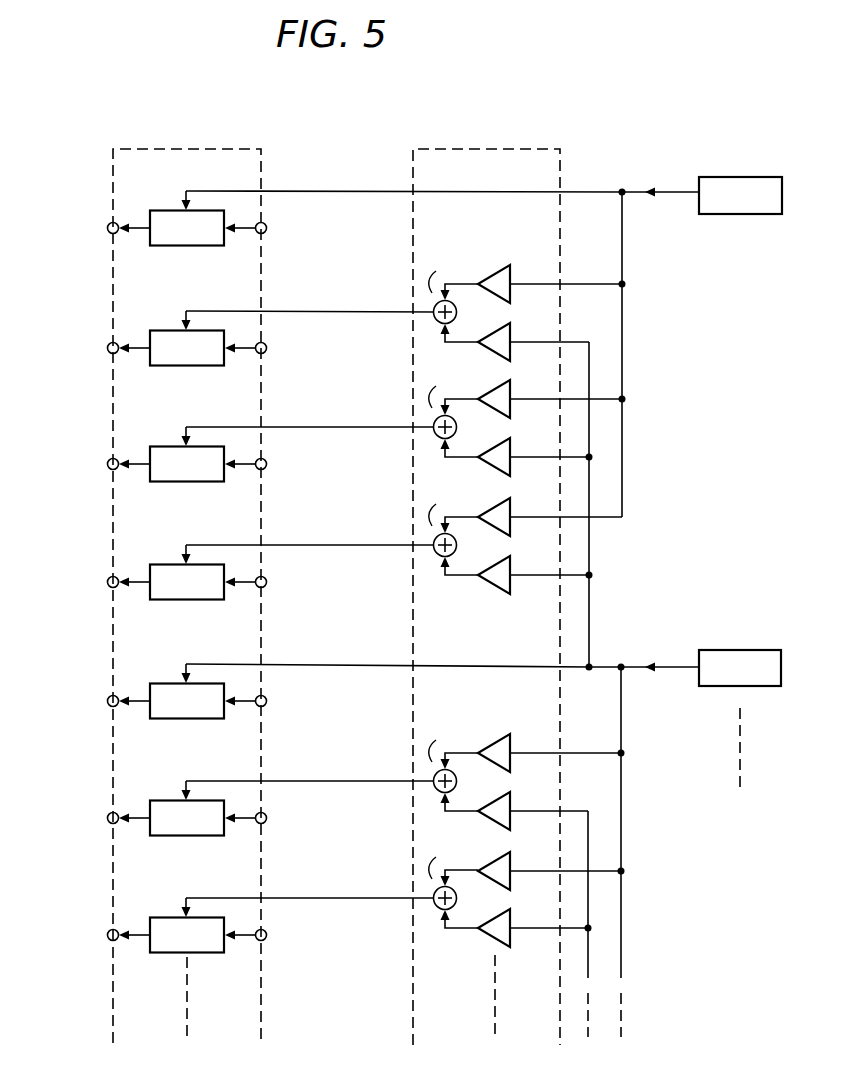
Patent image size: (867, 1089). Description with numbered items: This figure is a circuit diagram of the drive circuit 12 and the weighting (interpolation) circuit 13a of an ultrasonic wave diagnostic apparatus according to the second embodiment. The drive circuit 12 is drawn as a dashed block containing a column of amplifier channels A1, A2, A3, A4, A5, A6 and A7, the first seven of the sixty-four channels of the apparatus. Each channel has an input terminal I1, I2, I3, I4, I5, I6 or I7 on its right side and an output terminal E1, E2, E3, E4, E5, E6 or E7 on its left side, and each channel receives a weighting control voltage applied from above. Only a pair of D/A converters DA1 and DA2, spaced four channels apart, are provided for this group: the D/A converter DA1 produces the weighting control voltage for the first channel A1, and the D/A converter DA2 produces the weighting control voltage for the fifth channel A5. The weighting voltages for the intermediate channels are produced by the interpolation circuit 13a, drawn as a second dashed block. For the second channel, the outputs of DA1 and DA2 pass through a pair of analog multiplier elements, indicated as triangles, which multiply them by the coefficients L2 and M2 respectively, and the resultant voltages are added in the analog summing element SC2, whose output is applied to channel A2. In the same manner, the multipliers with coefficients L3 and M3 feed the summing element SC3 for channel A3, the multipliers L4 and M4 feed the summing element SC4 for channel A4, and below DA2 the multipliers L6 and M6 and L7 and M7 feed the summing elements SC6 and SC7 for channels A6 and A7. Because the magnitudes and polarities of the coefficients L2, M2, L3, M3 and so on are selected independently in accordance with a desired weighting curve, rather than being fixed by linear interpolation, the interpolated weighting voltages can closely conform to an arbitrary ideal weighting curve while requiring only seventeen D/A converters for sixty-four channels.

The drive circuit 12 is at (215, 149).
The interpolation circuit 13a is at (560, 113).
The first channel A1 is at (187, 218).
The second channel A2 is at (187, 338).
The third channel A3 is at (187, 454).
The fourth channel A4 is at (187, 572).
The fifth channel A5 is at (187, 691).
The sixth channel A6 is at (187, 808).
The seventh channel A7 is at (187, 925).
The output terminal 1 E1 is at (110, 229).
The output terminal 2 E2 is at (110, 349).
The output terminal 3 E3 is at (110, 465).
The output terminal 4 E4 is at (110, 583).
The output terminal 5 E5 is at (110, 702).
The output terminal 6 E6 is at (110, 819).
The output terminal 7 E7 is at (110, 936).
The input terminal 1 I1 is at (260, 229).
The input terminal 2 I2 is at (260, 349).
The input terminal 3 I3 is at (260, 465).
The input terminal 4 I4 is at (260, 583).
The input terminal 5 I5 is at (260, 702).
The input terminal 6 I6 is at (260, 819).
The input terminal 7 I7 is at (260, 936).
The summing circuit 2 SC2 is at (450, 294).
The summing element SC3 is at (450, 409).
The summing element SC4 is at (450, 527).
The summing circuit 6 SC6 is at (450, 763).
The summing circuit 7 SC7 is at (450, 880).
The multiplying coefficient L2 is at (552, 275).
The multiplying coefficient L3 is at (552, 390).
The coefficient amplifier L4 is at (550, 508).
The coefficient amplifier L6 is at (551, 744).
The coefficient amplifier L7 is at (551, 862).
The multiplying coefficient M2 is at (533, 336).
The multiplying coefficient M3 is at (535, 451).
The coefficient amplifier M4 is at (535, 569).
The coefficient amplifier M6 is at (533, 805).
The coefficient amplifier M7 is at (535, 922).
The D/A converter DA1 is at (740, 195).
The D/A converter DA2 is at (740, 668).